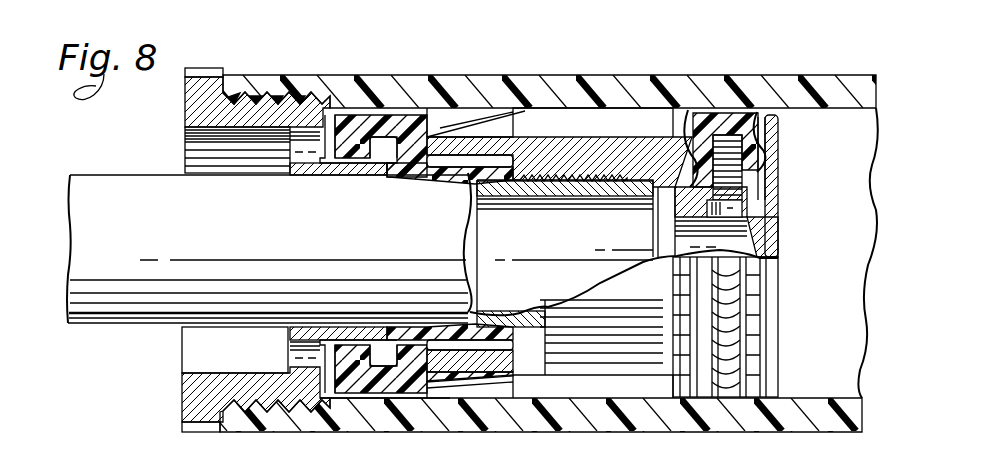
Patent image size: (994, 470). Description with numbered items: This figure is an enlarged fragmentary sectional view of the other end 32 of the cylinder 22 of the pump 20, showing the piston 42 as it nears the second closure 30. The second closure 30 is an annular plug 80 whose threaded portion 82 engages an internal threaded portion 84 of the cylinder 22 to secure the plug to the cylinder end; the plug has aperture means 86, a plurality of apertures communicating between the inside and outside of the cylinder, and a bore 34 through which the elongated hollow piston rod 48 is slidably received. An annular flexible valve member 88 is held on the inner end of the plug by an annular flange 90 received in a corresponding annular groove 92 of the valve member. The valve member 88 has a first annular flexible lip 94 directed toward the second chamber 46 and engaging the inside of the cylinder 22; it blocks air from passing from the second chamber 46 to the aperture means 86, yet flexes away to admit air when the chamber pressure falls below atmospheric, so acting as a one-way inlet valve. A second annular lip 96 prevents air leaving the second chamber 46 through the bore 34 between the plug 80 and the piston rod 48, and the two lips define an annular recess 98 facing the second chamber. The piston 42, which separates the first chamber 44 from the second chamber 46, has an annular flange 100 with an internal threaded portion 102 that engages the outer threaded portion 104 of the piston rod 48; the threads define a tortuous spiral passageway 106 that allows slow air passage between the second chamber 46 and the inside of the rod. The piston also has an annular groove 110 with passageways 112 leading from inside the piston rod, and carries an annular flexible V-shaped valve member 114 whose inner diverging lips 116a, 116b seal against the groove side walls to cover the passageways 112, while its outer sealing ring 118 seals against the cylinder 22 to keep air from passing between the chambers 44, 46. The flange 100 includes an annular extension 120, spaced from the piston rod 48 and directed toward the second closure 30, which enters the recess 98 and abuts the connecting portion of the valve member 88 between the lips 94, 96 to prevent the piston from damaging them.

The pump 20 is at (606, 71).
The cylinder 22 is at (530, 75).
The second closure 30 is at (182, 93).
The other end of the cylinder 32 is at (390, 426).
The bore 34 is at (337, 176).
The piston 42 is at (782, 125).
The first chamber 44 is at (830, 357).
The second chamber 46 is at (592, 132).
The piston rod 48 is at (130, 221).
The annular plug 80 is at (205, 78).
The threaded portion 82 is at (257, 87).
The internal threaded portion 84 is at (303, 103).
The aperture means 86 is at (288, 175).
The valve member 88 is at (399, 132).
The annular flange 90 is at (378, 176).
The annular groove 92 is at (398, 176).
The first annular flexible lip 94 is at (473, 120).
The second annular lip 96 is at (465, 178).
The annular recess 98 is at (495, 123).
The annular flange 100 is at (649, 133).
The internal threaded portion 102 is at (638, 192).
The outer threaded portion 104 is at (588, 200).
The tortuous passageway 106 is at (547, 192).
The annular groove 110 is at (747, 173).
The passageways 112 is at (747, 238).
The V-shaped valve member 114 is at (760, 115).
The inner diverging lip 116a is at (708, 95).
The inner diverging lip 116b is at (742, 206).
The outer sealing ring 118 is at (758, 112).
The annular extension 120 is at (452, 132).